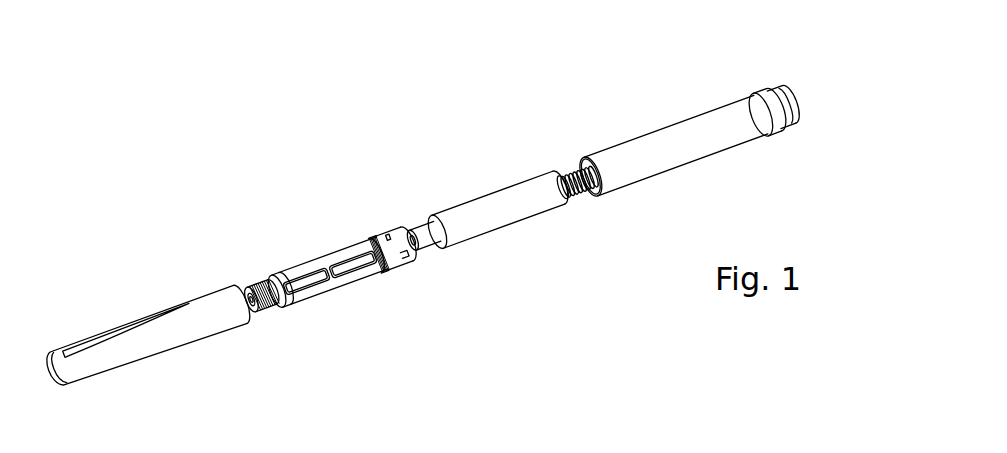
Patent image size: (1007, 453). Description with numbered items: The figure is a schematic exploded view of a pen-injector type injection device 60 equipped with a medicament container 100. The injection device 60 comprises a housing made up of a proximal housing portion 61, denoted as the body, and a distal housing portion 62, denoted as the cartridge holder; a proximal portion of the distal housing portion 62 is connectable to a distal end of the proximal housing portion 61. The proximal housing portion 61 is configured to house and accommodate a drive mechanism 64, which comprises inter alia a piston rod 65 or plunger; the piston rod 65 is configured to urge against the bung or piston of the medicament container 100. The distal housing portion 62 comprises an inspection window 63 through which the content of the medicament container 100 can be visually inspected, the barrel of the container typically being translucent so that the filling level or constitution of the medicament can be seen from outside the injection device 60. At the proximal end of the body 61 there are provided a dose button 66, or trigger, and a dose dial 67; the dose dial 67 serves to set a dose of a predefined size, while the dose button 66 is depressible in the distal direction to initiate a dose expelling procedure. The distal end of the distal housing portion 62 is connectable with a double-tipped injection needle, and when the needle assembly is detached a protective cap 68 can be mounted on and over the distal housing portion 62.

The injection device 60 is at (392, 165).
The proximal housing portion 61 is at (708, 123).
The distal housing portion 62 is at (312, 268).
The inspection window 63 is at (352, 268).
The drive mechanism 64 is at (578, 205).
The piston rod 65 is at (568, 178).
The dose button 66 is at (816, 91).
The dose dial 67 is at (772, 94).
The protective cap 68 is at (151, 348).
The medicament container 100 is at (483, 218).